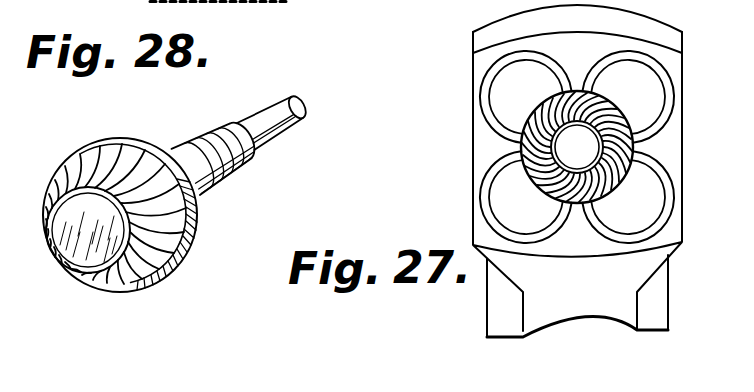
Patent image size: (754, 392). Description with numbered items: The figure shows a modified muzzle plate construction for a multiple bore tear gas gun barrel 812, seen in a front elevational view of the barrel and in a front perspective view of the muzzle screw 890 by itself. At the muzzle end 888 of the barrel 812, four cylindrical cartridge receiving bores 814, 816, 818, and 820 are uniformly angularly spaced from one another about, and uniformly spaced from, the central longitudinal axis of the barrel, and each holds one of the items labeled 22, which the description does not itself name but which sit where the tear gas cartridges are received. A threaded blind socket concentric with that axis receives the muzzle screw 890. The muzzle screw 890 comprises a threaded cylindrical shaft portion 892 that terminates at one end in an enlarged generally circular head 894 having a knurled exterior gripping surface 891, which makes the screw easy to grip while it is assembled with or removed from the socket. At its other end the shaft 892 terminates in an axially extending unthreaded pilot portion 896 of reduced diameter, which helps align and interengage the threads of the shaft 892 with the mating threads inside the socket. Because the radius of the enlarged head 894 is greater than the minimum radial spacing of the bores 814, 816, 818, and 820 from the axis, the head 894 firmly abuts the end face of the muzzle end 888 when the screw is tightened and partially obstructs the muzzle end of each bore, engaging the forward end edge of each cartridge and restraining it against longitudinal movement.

In FIG. 27, the ball 22 is at (495, 104).
In FIG. 27, the multiple bore tear gas gun barrel 812 is at (672, 50).
In FIG. 27, the cylindrical cartridge receiving bore 814 is at (481, 77).
In FIG. 27, the cylindrical cartridge receiving bore 816 is at (481, 193).
In FIG. 27, the cylindrical cartridge receiving bore 818 is at (672, 197).
In FIG. 27, the cylindrical cartridge receiving bore 820 is at (668, 102).
In FIG. 27, the muzzle end 888 is at (483, 148).
In FIG. 28, the muzzle screw 890 is at (199, 245).
In FIG. 27, the muzzle screw 890 is at (633, 147).
In FIG. 28, the knurled exterior gripping surface 891 is at (153, 287).
In FIG. 28, the threaded cylindrical shaft portion 892 is at (234, 182).
In FIG. 28, the enlarged generally circular head 894 is at (102, 140).
In FIG. 28, the unthreaded pilot portion 896 is at (305, 106).